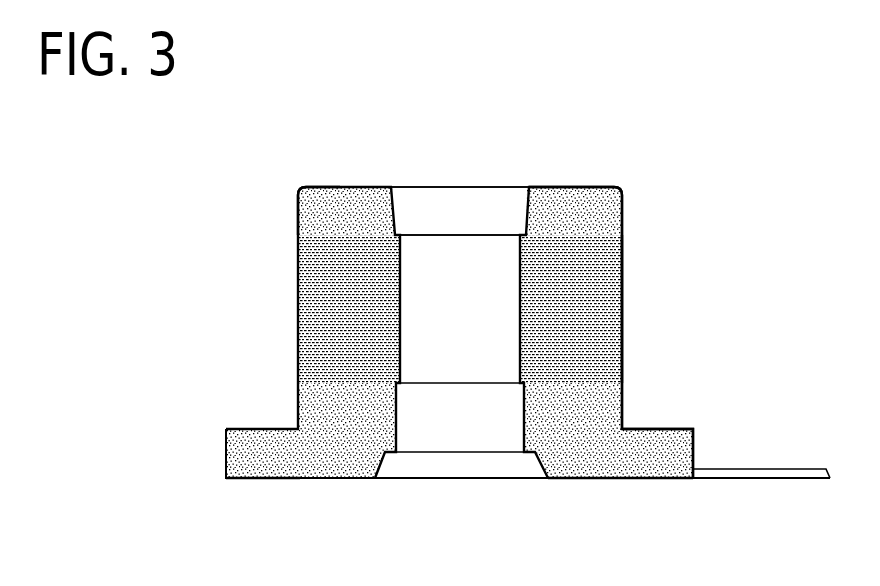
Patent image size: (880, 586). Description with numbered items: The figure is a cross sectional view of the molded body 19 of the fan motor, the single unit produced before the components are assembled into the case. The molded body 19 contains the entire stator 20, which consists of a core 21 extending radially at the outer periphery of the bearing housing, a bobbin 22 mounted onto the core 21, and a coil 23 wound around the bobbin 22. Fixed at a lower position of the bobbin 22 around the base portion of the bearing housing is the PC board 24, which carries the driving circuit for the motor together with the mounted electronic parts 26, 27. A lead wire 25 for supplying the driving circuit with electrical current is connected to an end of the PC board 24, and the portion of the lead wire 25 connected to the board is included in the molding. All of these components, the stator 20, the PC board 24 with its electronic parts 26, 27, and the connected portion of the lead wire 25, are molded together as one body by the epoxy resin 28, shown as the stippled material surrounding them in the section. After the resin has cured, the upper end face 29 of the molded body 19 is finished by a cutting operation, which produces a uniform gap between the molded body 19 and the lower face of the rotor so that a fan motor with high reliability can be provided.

The molded body 19 is at (655, 131).
The stator 20 is at (634, 207).
The core 21 is at (624, 253).
The bobbin 22 is at (305, 186).
The coil 23 is at (352, 186).
The PC board 24 is at (637, 428).
The lead wire 25 is at (727, 468).
The electronic part 26 is at (348, 478).
The electronic part 27 is at (282, 478).
The epoxy resin 28 is at (587, 478).
The upper end face 29 is at (375, 186).